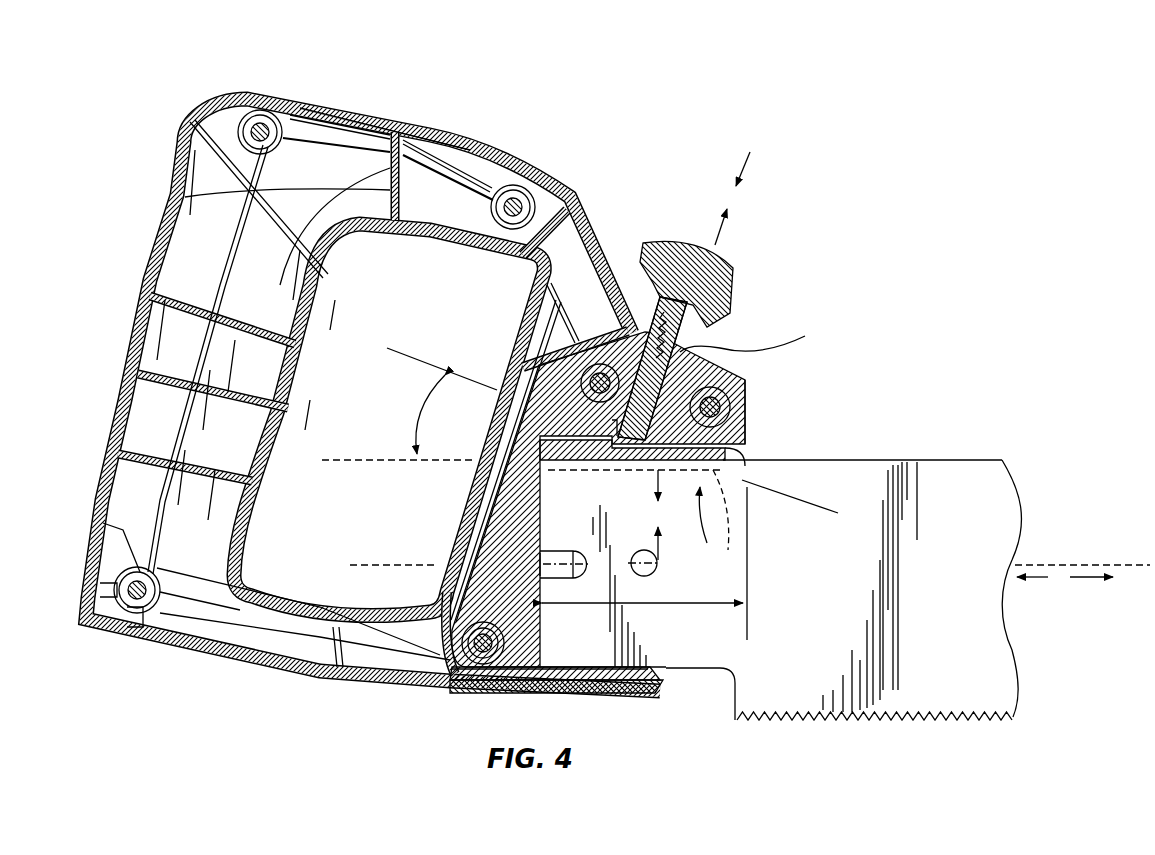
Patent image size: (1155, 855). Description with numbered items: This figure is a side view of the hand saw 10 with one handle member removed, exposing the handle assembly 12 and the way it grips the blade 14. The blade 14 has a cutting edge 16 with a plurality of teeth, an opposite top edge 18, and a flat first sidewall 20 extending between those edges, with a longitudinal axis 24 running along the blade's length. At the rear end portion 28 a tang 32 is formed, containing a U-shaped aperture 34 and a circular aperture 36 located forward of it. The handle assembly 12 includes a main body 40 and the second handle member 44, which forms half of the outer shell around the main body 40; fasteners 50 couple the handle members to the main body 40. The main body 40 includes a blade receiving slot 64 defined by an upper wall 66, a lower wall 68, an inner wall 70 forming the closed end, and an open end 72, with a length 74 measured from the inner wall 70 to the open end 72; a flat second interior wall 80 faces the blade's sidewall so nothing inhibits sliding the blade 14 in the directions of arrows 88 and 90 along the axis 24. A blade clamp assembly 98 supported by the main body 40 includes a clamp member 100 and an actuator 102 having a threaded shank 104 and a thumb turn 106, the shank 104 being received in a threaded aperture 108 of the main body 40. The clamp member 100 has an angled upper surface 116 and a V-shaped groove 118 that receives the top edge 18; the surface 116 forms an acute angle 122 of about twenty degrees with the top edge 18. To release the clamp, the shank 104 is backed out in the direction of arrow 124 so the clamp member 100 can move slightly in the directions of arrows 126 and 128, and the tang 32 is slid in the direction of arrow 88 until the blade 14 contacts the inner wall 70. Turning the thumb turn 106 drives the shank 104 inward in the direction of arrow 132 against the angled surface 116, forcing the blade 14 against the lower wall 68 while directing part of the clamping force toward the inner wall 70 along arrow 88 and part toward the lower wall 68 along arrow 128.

The hand saw 10 is at (620, 108).
The handle assembly 12 is at (346, 93).
The blade 14 is at (934, 446).
The cutting edge 16 is at (838, 715).
The top edge 18 is at (985, 460).
The first sidewall 20 is at (995, 690).
The longitudinal axis 24 is at (1045, 565).
The rear end portion 28 is at (742, 670).
The tang 32 is at (695, 660).
The U-shaped aperture 34 is at (560, 552).
The circular aperture 36 is at (645, 575).
The main body 40 is at (527, 683).
The second handle member 44 is at (448, 138).
The fastener 50 is at (261, 125).
The blade receiving slot 64 is at (742, 456).
The upper wall 66 is at (745, 462).
The lower wall 68 is at (575, 668).
The inner wall 70 is at (545, 643).
The open end 72 is at (748, 432).
The length 74 is at (690, 603).
The second interior wall 80 is at (553, 578).
The arrow 88 is at (1045, 588).
The arrow 90 is at (1090, 588).
The blade clamp assembly 98 is at (714, 510).
The clamp member 100 is at (547, 472).
The actuator 102 is at (740, 333).
The threaded shank 104 is at (755, 335).
The thumb turn 106 is at (672, 244).
The threaded aperture 108 is at (655, 300).
The angled upper surface 116 is at (623, 432).
The V-shaped groove 118 is at (729, 563).
The acute angle 122 is at (418, 428).
The arrow 124 is at (731, 228).
The arrow 126 is at (655, 530).
The arrow 128 is at (655, 495).
The arrow 132 is at (748, 165).